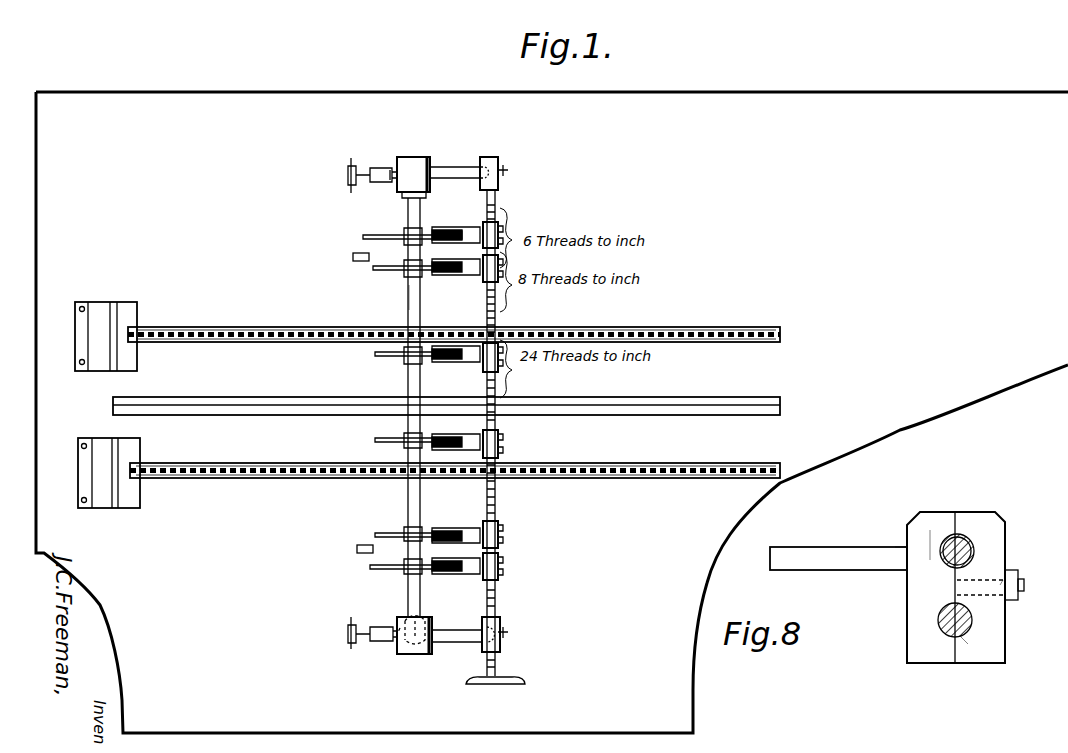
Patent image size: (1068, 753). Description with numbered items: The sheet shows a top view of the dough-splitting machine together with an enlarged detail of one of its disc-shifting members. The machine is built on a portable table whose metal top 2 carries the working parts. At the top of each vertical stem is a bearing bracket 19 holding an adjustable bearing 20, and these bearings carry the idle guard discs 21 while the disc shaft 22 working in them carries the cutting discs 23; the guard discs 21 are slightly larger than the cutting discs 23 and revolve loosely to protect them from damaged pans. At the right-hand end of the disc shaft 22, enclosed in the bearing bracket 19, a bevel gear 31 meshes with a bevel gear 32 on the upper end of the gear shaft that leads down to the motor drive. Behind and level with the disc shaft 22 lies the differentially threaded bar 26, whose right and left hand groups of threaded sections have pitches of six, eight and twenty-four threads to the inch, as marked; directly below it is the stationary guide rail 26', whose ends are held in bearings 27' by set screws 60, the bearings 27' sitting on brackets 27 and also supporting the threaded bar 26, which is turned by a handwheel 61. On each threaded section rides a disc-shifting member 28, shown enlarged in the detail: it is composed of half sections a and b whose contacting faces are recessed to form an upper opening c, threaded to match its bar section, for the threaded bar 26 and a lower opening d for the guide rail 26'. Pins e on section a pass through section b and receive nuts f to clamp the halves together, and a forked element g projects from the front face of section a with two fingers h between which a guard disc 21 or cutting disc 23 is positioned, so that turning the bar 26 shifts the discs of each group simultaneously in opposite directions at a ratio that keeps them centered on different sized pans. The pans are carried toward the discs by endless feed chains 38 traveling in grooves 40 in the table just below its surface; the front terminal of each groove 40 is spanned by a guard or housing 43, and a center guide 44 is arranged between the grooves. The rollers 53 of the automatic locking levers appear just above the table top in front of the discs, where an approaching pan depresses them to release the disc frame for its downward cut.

In FIG. 1, the metal top 2 is at (40, 164).
In FIG. 1, the bearing bracket 19 is at (408, 157).
In FIG. 1, the adjustable bearing 20 is at (406, 222).
In FIG. 1, the guard disc 21 is at (362, 236).
In FIG. 1, the disc shaft 22 is at (406, 298).
In FIG. 1, the cutting disc 23 is at (382, 272).
In FIG. 1, the differentially threaded bar 26 is at (514, 433).
In FIG. 8, the differentially threaded bar 26 is at (963, 543).
In FIG. 8, the stationary guide rail 26' is at (942, 628).
In FIG. 1, the bracket 27 is at (456, 408).
In FIG. 1, the bearing 27' is at (517, 398).
In FIG. 1, the disc-shifting member 28 is at (502, 232).
In FIG. 8, the disc-shifting member 28 is at (936, 518).
In FIG. 1, the bevel gear 31 is at (400, 643).
In FIG. 1, the bevel gear 32 is at (406, 624).
In FIG. 1, the endless feed chain 38 is at (594, 325).
In FIG. 1, the groove or guide 40 is at (252, 326).
In FIG. 1, the guard or housing 43 is at (86, 438).
In FIG. 1, the center guide 44 is at (224, 398).
In FIG. 1, the roller 53 is at (352, 262).
In FIG. 1, the set screw 60 is at (507, 175).
In FIG. 1, the handwheel 61 is at (505, 684).
In FIG. 8, the half section a is at (915, 604).
In FIG. 8, the half section b is at (1000, 625).
In FIG. 8, the upper opening c is at (942, 549).
In FIG. 8, the lower opening d is at (968, 632).
In FIG. 8, the pin e is at (968, 580).
In FIG. 8, the nut f is at (1015, 572).
In FIG. 8, the forked element g is at (895, 545).
In FIG. 8, the prong or finger h is at (808, 568).